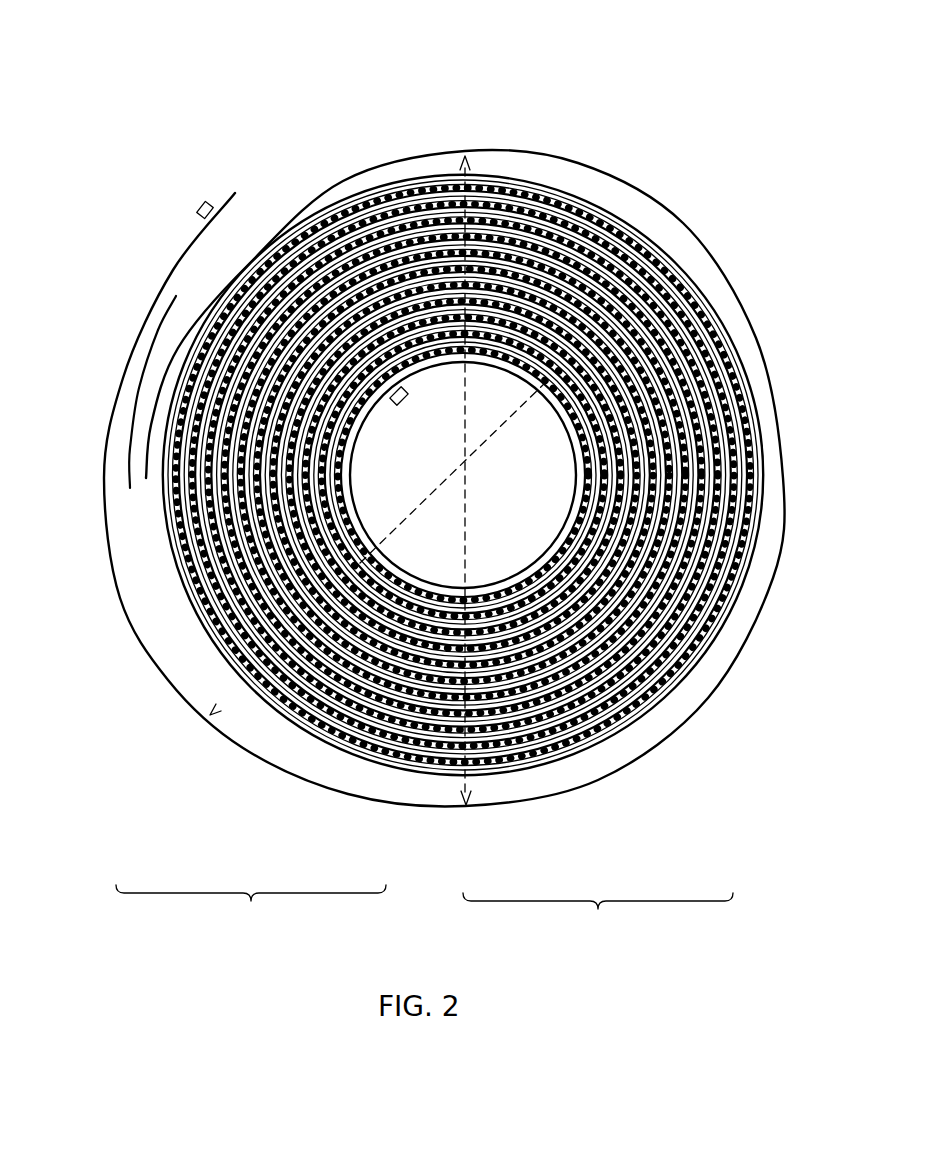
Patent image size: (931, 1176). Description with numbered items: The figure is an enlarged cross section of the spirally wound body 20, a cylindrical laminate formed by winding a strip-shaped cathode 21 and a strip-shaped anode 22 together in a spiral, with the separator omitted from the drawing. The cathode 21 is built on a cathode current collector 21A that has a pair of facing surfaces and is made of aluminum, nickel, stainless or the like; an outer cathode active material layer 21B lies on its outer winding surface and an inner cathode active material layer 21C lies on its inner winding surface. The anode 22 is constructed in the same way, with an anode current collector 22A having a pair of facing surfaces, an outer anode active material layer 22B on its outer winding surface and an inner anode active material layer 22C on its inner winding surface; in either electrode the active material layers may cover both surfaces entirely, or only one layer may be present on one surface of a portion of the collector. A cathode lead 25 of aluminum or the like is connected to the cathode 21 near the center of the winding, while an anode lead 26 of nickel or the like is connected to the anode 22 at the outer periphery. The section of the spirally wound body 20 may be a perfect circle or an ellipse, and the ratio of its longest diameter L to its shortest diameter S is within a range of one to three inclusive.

The spirally wound body 20 is at (707, 130).
The cathode 21 is at (435, 560).
The cathode current collector 21A is at (175, 610).
The outer cathode active material layer 21B is at (255, 690).
The inner cathode active material layer 21C is at (357, 717).
The anode 22 is at (463, 562).
The anode current collector 22A is at (487, 750).
The outer anode active material layer 22B is at (587, 730).
The inner anode active material layer 22C is at (680, 657).
The cathode lead 25 is at (395, 393).
The anode lead 26 is at (199, 198).
The shortest diameter S is at (458, 142).
The longest diameter L is at (668, 240).